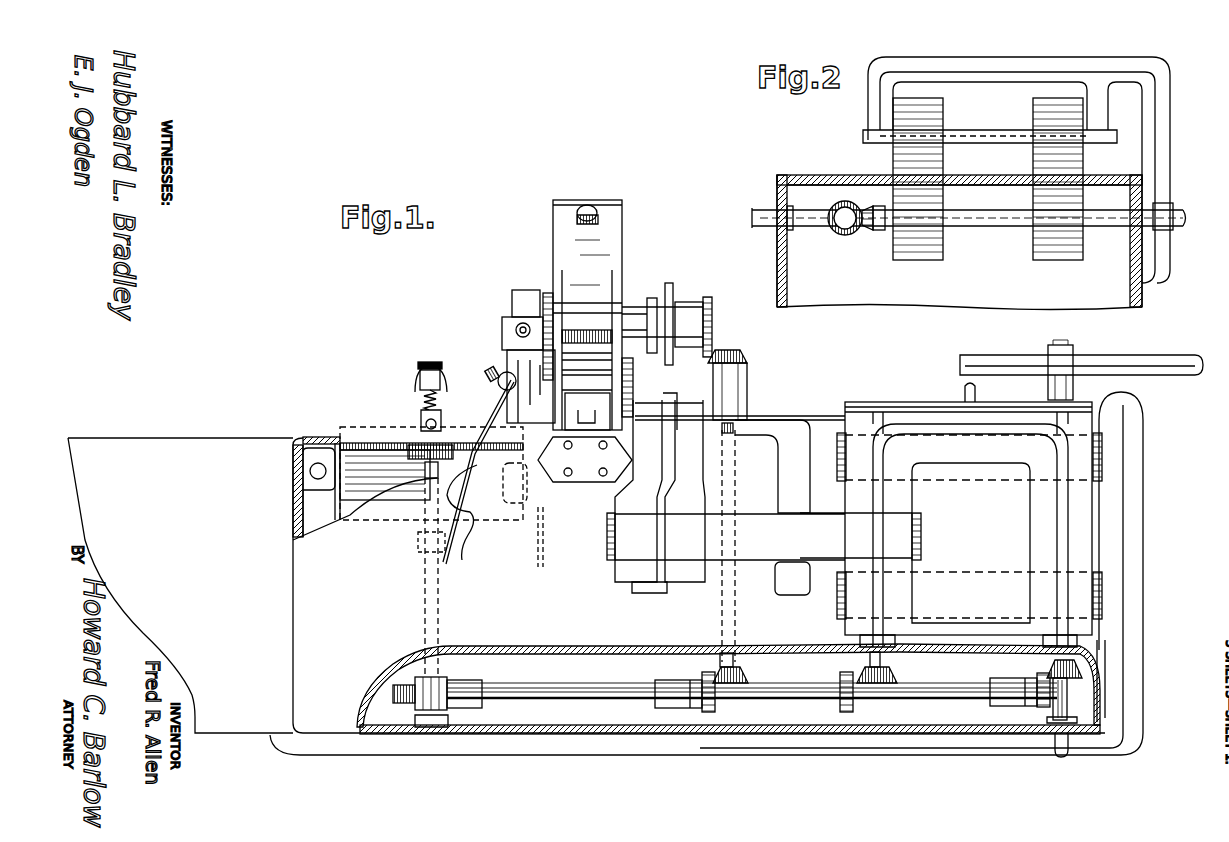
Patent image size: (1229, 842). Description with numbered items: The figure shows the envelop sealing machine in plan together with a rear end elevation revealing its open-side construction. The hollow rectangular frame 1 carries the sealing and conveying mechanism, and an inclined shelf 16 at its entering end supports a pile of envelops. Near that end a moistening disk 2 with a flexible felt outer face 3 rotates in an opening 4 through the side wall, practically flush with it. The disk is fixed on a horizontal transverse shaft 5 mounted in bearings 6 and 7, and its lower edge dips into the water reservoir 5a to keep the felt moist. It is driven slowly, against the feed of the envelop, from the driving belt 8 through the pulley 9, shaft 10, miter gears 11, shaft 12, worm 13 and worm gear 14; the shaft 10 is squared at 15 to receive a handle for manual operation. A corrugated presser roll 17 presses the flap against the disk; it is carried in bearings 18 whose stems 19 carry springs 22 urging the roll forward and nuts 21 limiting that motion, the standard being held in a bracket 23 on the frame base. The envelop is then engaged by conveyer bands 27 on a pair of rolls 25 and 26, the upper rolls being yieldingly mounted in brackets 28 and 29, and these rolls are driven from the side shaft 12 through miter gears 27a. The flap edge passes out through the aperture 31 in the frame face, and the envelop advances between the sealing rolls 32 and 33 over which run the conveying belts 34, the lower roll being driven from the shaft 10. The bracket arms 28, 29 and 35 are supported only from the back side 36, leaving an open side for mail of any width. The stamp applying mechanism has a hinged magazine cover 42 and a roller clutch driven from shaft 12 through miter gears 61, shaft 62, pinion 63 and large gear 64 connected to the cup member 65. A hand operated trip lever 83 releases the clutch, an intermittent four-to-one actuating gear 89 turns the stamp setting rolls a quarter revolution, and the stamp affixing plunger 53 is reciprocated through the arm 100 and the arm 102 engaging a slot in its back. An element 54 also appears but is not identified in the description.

In FIG. 1, the hollow rectangular frame 1 is at (327, 720).
In FIG. 2, the hollow rectangular frame 1 is at (840, 176).
In FIG. 1, the disk 2 is at (385, 475).
In FIG. 1, the flexible outer face 3 is at (393, 437).
In FIG. 1, the opening 4 is at (343, 440).
In FIG. 1, the shaft 5 is at (430, 573).
In FIG. 1, the water reservoir 5a is at (333, 522).
In FIG. 1, the bearing 6 is at (418, 541).
In FIG. 1, the bearing 7 is at (432, 727).
In FIG. 1, the driving belt 8 is at (1187, 358).
In FIG. 1, the pulley 9 is at (1077, 355).
In FIG. 1, the shaft 10 is at (1065, 695).
In FIG. 2, the shaft 10 is at (815, 232).
In FIG. 1, the miter gears 11 is at (1047, 670).
In FIG. 2, the miter gears 11 is at (866, 232).
In FIG. 1, the shaft 12 is at (758, 692).
In FIG. 1, the worm 13 is at (443, 680).
In FIG. 1, the worm gear 14 is at (402, 697).
In FIG. 1, the squared portion 15 is at (1070, 752).
In FIG. 1, the shelf 16 is at (112, 443).
In FIG. 1, the presser roll 17 is at (410, 433).
In FIG. 1, the bearings 18 is at (420, 417).
In FIG. 1, the stems 19 is at (433, 360).
In FIG. 1, the nuts 21 is at (423, 363).
In FIG. 1, the springs 22 is at (437, 402).
In FIG. 1, the bracket 23 is at (443, 392).
In FIG. 1, the roll 25 is at (607, 547).
In FIG. 1, the roll 26 is at (922, 538).
In FIG. 1, the conveyer bands 27 is at (758, 553).
In FIG. 1, the miter gears 27a is at (860, 677).
In FIG. 1, the supporting bracket 28 is at (688, 462).
In FIG. 1, the supporting bracket 29 is at (897, 503).
In FIG. 1, the aperture 31 is at (800, 420).
In FIG. 1, the sealing roll 32 is at (837, 460).
In FIG. 1, the sealing roll 33 is at (1103, 460).
In FIG. 2, the sealing roll 33 is at (1033, 111).
In FIG. 1, the conveying belts 34 is at (993, 500).
In FIG. 1, the bracket arm 35 is at (1080, 523).
In FIG. 2, the bracket arm 35 is at (1098, 68).
In FIG. 2, the back side 36 is at (1130, 262).
In FIG. 1, the cover 42 is at (605, 217).
In FIG. 1, the stamp affixing plunger 53 is at (582, 477).
In FIG. 1, the guide 54 is at (552, 460).
In FIG. 1, the miter gears 61 is at (710, 673).
In FIG. 1, the shaft 62 is at (718, 573).
In FIG. 1, the pinion 63 is at (745, 352).
In FIG. 1, the large gear 64 is at (714, 328).
In FIG. 1, the cup member 65 is at (675, 303).
In FIG. 1, the trip lever 83 is at (479, 490).
In FIG. 1, the actuating gear 89 is at (548, 295).
In FIG. 1, the arm 100 is at (523, 367).
In FIG. 1, the arm 102 is at (582, 420).